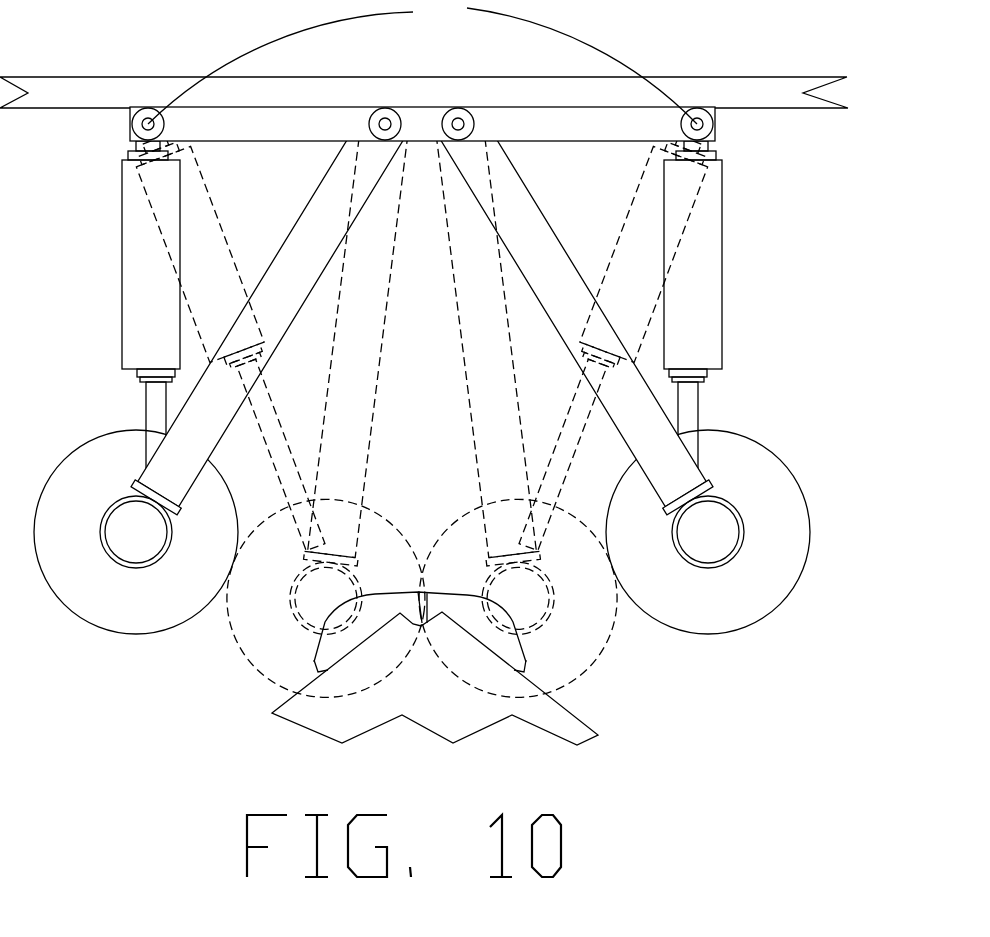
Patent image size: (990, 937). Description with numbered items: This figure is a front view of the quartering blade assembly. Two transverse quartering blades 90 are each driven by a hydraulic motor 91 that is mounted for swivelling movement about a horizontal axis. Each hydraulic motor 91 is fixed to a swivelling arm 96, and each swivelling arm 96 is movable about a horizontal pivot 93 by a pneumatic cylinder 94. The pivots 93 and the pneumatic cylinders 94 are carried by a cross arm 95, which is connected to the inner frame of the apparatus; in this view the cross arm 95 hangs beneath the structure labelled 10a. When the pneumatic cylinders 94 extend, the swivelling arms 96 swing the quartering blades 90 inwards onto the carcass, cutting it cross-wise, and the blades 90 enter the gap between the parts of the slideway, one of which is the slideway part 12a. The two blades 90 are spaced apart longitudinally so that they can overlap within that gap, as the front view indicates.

The support platform 10a is at (848, 76).
The cross arm 95 is at (620, 122).
The horizontal pivot 93 is at (458, 124).
The pneumatic cylinder 94 is at (695, 297).
The swivelling arm 96 is at (645, 427).
The transverse quartering blade 90 is at (775, 515).
The hydraulic motor 91 is at (738, 552).
The slideway part 12a is at (448, 707).